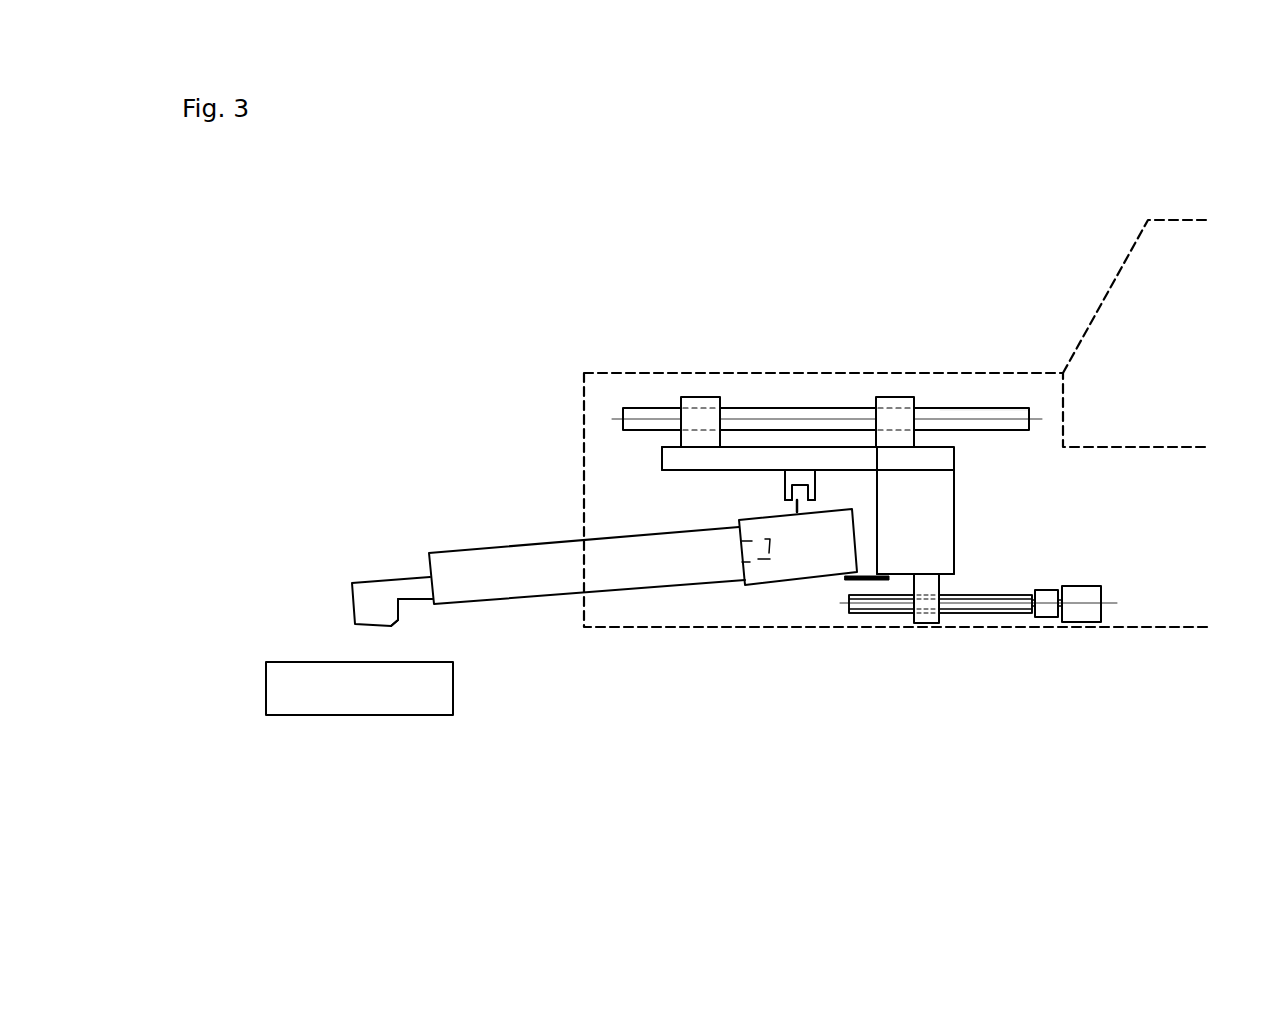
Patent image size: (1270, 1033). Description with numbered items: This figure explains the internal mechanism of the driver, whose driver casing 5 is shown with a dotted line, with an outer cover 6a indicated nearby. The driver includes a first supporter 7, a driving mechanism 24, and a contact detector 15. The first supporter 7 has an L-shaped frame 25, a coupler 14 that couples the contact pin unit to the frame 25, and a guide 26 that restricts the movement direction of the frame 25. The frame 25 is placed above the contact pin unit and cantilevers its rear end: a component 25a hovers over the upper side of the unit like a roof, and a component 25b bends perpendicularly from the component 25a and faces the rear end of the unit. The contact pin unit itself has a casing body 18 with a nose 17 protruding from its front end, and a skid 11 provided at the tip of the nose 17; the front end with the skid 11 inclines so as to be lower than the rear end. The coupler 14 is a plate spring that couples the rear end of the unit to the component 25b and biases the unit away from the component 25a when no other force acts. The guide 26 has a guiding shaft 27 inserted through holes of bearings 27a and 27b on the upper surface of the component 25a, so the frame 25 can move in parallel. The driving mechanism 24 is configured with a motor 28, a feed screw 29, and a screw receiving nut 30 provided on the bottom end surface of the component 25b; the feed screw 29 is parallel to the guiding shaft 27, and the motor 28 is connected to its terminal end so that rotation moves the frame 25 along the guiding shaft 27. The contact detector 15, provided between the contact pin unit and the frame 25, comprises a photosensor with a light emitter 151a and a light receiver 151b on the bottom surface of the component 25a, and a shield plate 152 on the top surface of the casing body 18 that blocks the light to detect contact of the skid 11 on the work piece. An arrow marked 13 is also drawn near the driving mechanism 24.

The driver casing 5 is at (1130, 630).
The outer cover 6a is at (1080, 308).
The first supporter 7 is at (610, 502).
The skid 11 is at (366, 580).
The drive unit 13 is at (978, 688).
The coupler 14 is at (855, 581).
The contact detector 15 is at (799, 458).
The light emitter 151a is at (785, 496).
The light receiver 151b is at (818, 497).
The shield plate 152 is at (797, 512).
The nose 17 is at (415, 604).
The casing body 18 is at (650, 593).
The driving mechanism 24 is at (1024, 537).
The frame 25 is at (954, 495).
The component 25a is at (661, 460).
The component 25b is at (954, 548).
The guide 26 is at (946, 394).
The guiding shaft 27 is at (995, 407).
The bearing 27a is at (699, 397).
The bearing 27b is at (888, 397).
The motor 28 is at (1080, 624).
The feed screw 29 is at (983, 615).
The screw receiving nut 30 is at (924, 625).